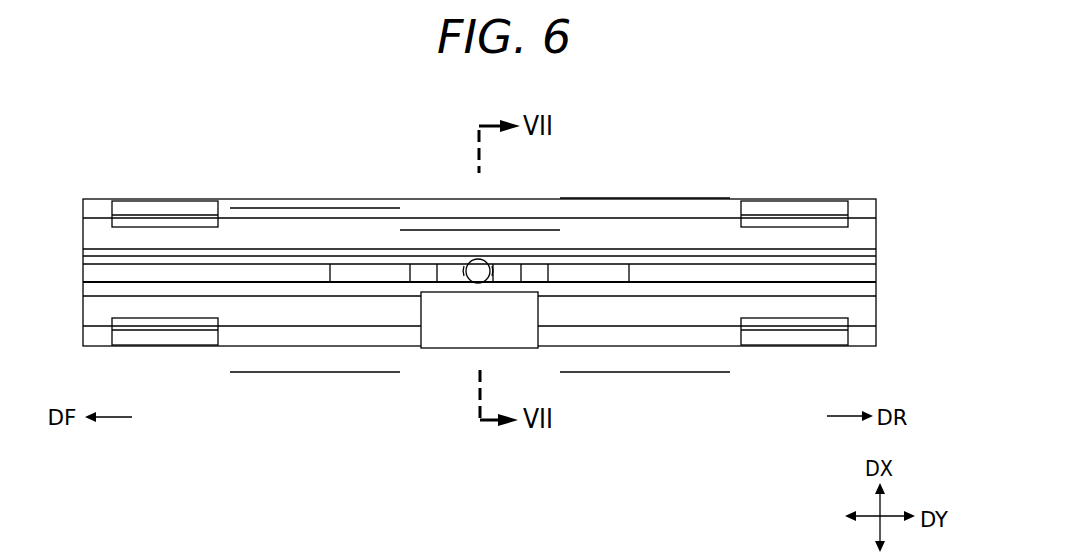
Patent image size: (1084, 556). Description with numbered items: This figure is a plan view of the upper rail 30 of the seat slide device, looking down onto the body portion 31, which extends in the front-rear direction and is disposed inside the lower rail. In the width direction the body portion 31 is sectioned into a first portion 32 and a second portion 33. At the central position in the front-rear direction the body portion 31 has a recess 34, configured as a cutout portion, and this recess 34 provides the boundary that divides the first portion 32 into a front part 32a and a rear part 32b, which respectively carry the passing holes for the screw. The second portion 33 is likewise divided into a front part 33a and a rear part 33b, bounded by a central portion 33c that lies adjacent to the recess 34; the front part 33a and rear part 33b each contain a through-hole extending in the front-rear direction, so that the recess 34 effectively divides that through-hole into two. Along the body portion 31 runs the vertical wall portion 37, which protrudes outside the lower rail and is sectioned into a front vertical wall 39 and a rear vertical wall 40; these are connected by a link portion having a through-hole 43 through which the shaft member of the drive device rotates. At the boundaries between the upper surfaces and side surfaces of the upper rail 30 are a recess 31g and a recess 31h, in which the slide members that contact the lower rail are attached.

The upper rail 30 is at (736, 92).
The body portion 31 is at (930, 199).
The recess 31g is at (165, 347).
The recess 31h is at (165, 207).
The first portion 32 is at (882, 273).
The front part 32a is at (308, 347).
The rear part 32b is at (650, 347).
The second portion 33 is at (882, 199).
The front part 33a is at (305, 208).
The rear part 33b is at (650, 198).
The central portion 33c is at (460, 230).
The recess 34 is at (538, 350).
The vertical wall portion 37 is at (105, 257).
The front vertical wall 39 is at (330, 264).
The rear vertical wall 40 is at (629, 264).
The through-hole 43 is at (478, 283).